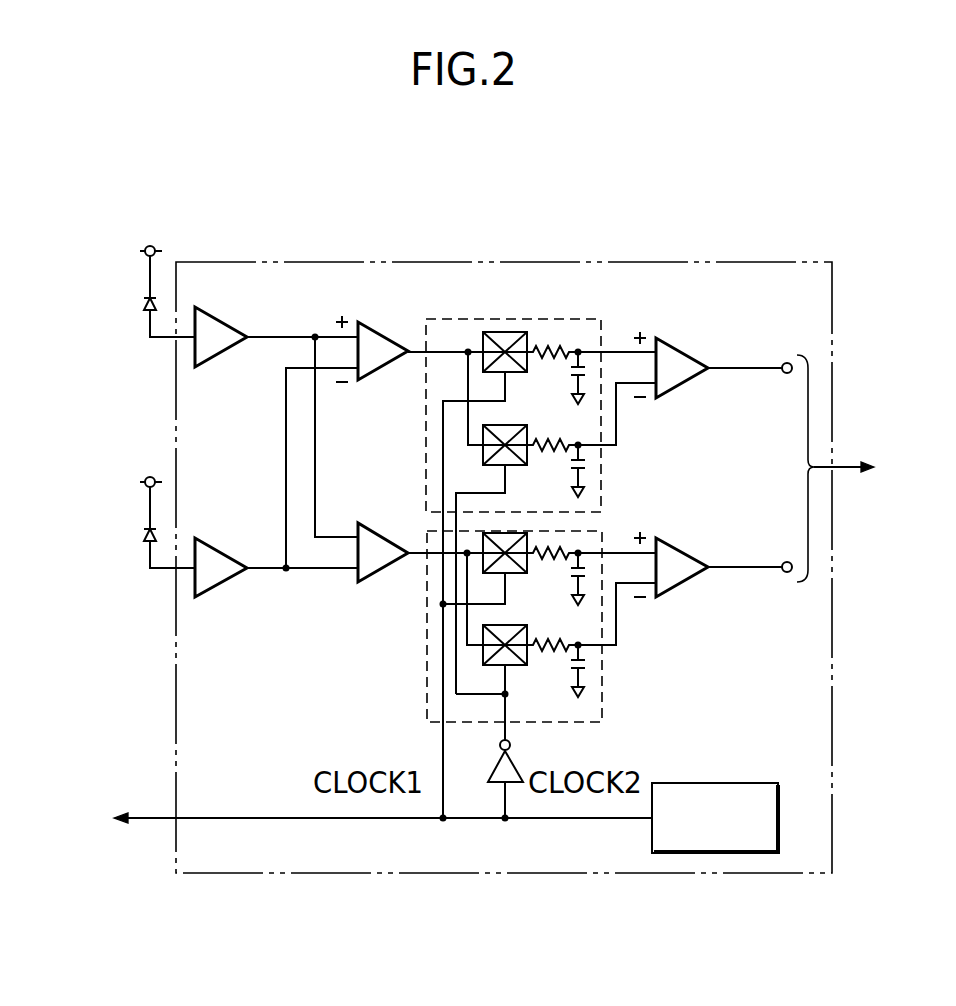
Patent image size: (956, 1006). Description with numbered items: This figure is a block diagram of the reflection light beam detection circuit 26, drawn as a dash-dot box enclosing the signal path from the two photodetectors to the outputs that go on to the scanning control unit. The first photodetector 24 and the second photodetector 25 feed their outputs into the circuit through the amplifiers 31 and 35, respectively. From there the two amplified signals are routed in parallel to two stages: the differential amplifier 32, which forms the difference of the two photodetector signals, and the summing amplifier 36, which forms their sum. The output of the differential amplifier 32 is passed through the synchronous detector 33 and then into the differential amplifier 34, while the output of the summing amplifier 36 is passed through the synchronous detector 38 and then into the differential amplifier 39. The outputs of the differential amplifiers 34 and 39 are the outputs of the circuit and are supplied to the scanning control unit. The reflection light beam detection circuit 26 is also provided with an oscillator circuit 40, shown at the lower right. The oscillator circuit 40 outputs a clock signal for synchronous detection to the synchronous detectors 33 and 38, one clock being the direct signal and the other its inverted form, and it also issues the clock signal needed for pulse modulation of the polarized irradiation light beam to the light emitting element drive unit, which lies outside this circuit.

The first photodetector 24 is at (144, 300).
The second photodetector 25 is at (144, 529).
The reflection light beam detection circuit 26 is at (582, 262).
The amplifier 31 is at (225, 320).
The differential amplifier 32 is at (387, 339).
The synchronous detector 33 is at (553, 316).
The differential amplifier 34 is at (678, 349).
The amplifier 35 is at (223, 581).
The summing amplifier 36 is at (372, 576).
The synchronous detector 38 is at (427, 668).
The differential amplifier 39 is at (675, 587).
The oscillator circuit 40 is at (740, 783).